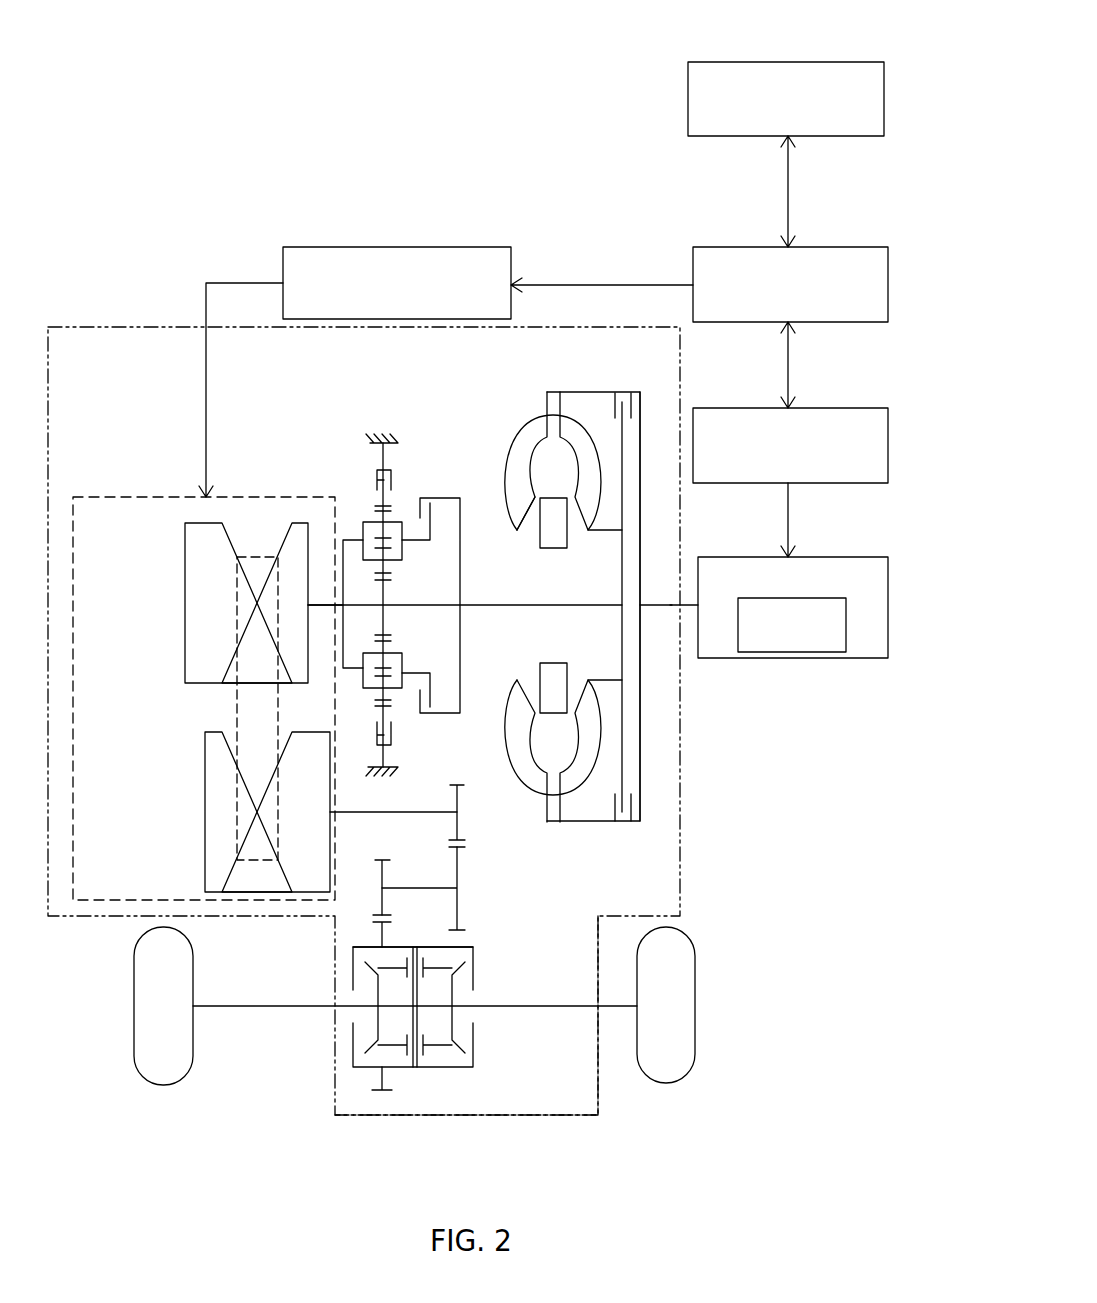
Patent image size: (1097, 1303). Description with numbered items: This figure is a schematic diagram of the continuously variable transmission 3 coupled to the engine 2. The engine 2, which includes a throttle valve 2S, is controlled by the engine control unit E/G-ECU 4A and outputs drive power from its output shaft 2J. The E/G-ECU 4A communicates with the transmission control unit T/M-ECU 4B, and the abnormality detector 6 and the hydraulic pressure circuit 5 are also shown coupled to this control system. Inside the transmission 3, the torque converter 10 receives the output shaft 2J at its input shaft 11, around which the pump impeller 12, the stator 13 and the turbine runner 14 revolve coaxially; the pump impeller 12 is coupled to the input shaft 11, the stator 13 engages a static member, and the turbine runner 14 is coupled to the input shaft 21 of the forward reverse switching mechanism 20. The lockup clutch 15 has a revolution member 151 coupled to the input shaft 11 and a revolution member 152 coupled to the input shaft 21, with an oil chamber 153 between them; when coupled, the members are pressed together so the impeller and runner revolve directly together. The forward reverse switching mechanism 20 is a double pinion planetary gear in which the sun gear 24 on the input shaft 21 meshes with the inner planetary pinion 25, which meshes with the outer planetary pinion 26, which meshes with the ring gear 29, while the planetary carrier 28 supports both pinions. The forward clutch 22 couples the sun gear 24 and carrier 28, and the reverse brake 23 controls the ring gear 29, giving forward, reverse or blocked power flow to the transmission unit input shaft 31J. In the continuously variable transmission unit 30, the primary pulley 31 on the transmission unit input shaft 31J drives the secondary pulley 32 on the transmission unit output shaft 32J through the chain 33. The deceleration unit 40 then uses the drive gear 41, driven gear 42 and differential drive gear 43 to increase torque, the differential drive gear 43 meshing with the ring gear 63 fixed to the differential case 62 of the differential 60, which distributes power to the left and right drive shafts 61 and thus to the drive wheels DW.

The engine 2 is at (865, 658).
The throttle valve 2S is at (830, 598).
The output shaft 2J is at (687, 605).
The continuously variable transmission 3 is at (505, 1118).
The engine control unit (E/G-ECU) 4A is at (873, 408).
The transmission control unit (T/M-ECU) 4B is at (873, 247).
The hydraulic pressure circuit 5 is at (475, 247).
The abnormality detector 6 is at (870, 62).
The torque converter 10 is at (492, 434).
The input shaft 11 is at (660, 603).
The pump impeller 12 is at (512, 503).
The stator 13 is at (563, 663).
The turbine runner 14 is at (598, 507).
The lockup clutch 15 is at (630, 838).
The revolution member 151 is at (640, 700).
The revolution member 152 is at (623, 752).
The oil chamber 153 is at (632, 786).
The forward reverse switching mechanism 20 is at (351, 396).
The input shaft 21 is at (490, 607).
The forward clutch 22 is at (432, 479).
The reverse brake 23 is at (411, 744).
The sun gear 24 is at (395, 632).
The inner planetary pinion 25 is at (395, 575).
The outer planetary pinion 26 is at (378, 510).
The planetary carrier 28 is at (362, 668).
The ring gear 29 is at (372, 702).
The continuously variable transmission unit 30 is at (120, 497).
The primary pulley 31 is at (167, 590).
The transmission unit input shaft 31J is at (323, 605).
The secondary pulley 32 is at (179, 800).
The transmission unit output shaft 32J is at (343, 813).
The chain 33 is at (237, 707).
The deceleration unit 40 is at (479, 879).
The drive gear 41 is at (457, 800).
The driven gear 42 is at (457, 915).
The differential drive gear 43 is at (382, 877).
The differential 60 is at (497, 1050).
The drive shaft 61 is at (240, 1008).
The differential case 62 is at (473, 968).
The ring gear 63 is at (384, 930).
The drive wheel DW is at (160, 1085).